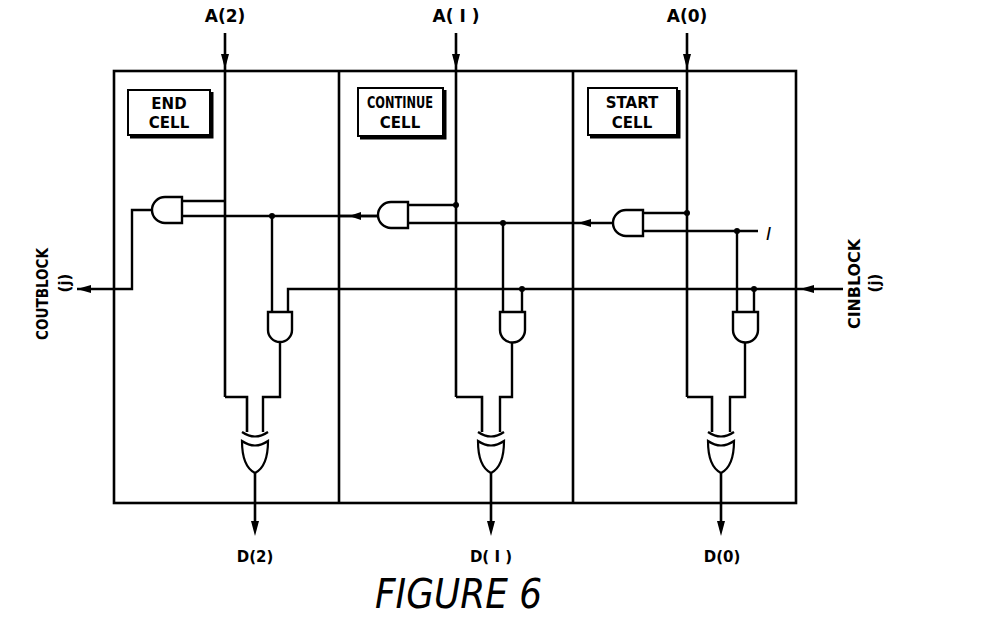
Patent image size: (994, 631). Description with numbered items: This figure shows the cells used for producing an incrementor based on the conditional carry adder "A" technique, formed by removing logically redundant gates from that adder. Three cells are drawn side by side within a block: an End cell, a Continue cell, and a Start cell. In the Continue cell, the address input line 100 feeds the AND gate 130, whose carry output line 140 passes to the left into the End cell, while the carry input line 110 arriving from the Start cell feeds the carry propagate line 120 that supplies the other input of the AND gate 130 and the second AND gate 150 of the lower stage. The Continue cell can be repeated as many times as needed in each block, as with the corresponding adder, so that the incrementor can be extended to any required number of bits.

The address input line A(1) 100 is at (457, 134).
The carry input line from start cell 110 is at (566, 221).
The carry propagate line 120 is at (478, 221).
The AND gate of continue cell 130 is at (391, 205).
The carry output line of continue cell 140 is at (357, 219).
The AND gate (second) of continue cell 150 is at (498, 327).